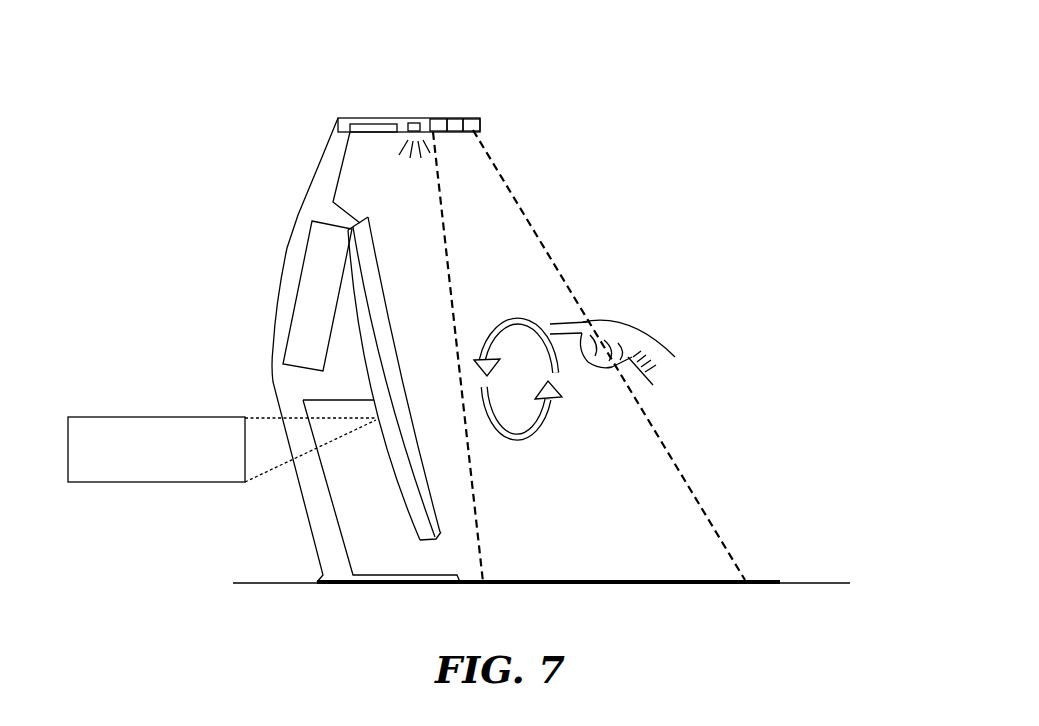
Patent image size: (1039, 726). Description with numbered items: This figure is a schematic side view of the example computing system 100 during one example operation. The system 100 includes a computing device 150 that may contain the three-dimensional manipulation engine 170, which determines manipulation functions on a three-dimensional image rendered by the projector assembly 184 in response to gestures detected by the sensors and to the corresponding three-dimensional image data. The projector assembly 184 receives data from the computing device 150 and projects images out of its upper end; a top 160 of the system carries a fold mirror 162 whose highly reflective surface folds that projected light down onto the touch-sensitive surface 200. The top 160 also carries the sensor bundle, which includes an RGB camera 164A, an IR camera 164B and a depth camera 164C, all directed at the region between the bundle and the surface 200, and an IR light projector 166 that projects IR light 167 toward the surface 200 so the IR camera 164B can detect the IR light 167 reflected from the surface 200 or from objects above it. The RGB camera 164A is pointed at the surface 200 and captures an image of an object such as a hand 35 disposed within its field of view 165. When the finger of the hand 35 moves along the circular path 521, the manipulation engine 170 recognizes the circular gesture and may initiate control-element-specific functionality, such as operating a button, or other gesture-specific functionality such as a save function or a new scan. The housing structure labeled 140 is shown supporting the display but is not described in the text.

The computing system 100 is at (656, 232).
The display stand housing 140 is at (271, 262).
The computing device 150 is at (390, 460).
The top 160 is at (338, 115).
The fold mirror 162 is at (360, 124).
The RGB camera 164A is at (465, 118).
The IR camera 164B is at (452, 118).
The depth camera 164C is at (440, 118).
The field of view 165 is at (503, 174).
The IR light projector 166 is at (411, 122).
The IR light 167 is at (396, 151).
The 3D manipulation engine 170 is at (164, 482).
The projector assembly 184 is at (305, 233).
The touch-sensitive surface 200 is at (778, 586).
The hand 35 is at (655, 337).
The path 521 is at (520, 318).